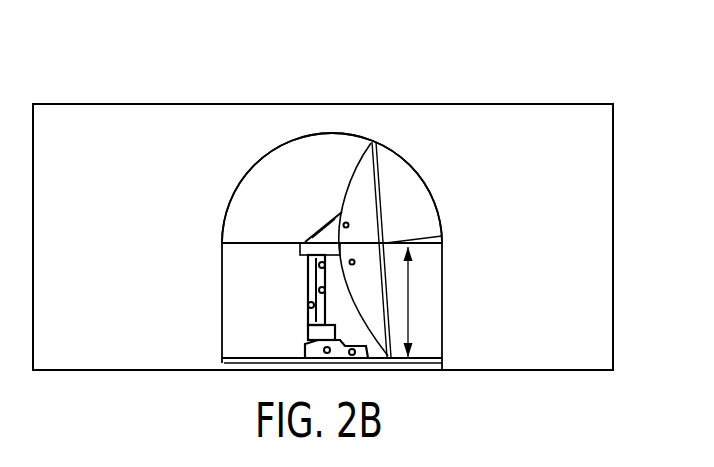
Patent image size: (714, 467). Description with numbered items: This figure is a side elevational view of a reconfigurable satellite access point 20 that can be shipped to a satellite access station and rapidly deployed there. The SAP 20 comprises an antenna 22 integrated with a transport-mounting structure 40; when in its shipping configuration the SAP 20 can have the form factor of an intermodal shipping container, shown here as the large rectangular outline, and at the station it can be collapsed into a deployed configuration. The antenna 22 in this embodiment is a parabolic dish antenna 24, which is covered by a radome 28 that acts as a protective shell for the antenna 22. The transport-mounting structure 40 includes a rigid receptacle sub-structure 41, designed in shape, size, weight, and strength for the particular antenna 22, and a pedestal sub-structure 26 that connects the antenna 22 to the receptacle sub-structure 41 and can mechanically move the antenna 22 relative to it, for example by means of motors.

The reconfigurable satellite access point 20 is at (120, 79).
The antenna 22 is at (410, 142).
The parabolic dish antenna 24 is at (351, 160).
The pedestal sub-structure 26 is at (305, 307).
The radome 28 is at (257, 180).
The transport-mounting structure 40 is at (571, 90).
The receptacle sub-structure 41 is at (613, 172).